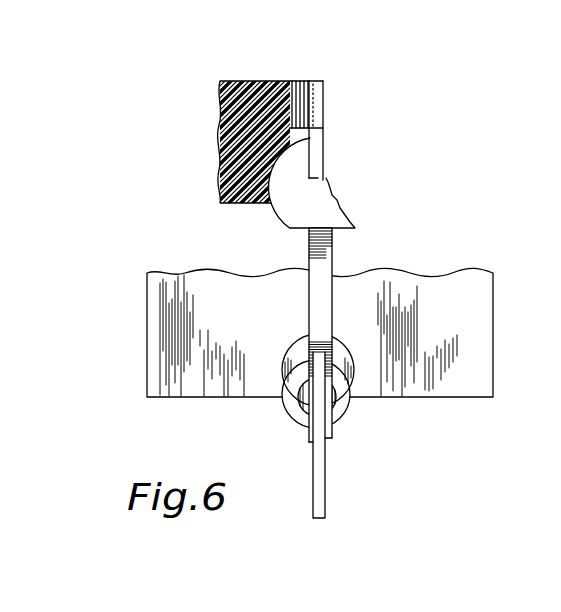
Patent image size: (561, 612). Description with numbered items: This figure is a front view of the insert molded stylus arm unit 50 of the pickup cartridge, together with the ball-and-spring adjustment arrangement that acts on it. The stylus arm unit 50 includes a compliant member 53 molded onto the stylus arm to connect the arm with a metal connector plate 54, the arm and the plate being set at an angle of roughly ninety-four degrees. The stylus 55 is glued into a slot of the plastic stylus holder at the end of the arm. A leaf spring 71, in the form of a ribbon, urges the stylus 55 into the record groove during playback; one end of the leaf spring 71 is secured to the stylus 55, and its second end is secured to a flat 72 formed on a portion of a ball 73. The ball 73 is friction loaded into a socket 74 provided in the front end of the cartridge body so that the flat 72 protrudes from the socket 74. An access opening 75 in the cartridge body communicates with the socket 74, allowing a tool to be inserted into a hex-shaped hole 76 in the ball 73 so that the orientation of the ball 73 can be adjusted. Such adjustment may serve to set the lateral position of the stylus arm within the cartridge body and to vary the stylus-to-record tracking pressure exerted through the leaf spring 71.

The insert molded stylus arm unit 50 is at (137, 338).
The compliant member 53 is at (352, 368).
The connector plate 54 is at (491, 364).
The stylus 55 is at (324, 483).
The leaf spring 71 is at (333, 252).
The flat 72 is at (297, 228).
The ball 73 is at (284, 208).
The socket 74 is at (263, 165).
The access opening 75 is at (298, 81).
The hex-shaped hole 76 is at (324, 151).